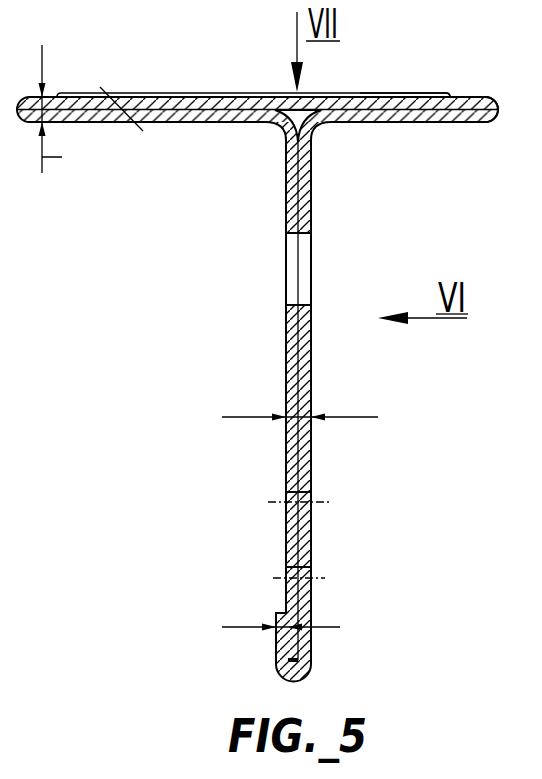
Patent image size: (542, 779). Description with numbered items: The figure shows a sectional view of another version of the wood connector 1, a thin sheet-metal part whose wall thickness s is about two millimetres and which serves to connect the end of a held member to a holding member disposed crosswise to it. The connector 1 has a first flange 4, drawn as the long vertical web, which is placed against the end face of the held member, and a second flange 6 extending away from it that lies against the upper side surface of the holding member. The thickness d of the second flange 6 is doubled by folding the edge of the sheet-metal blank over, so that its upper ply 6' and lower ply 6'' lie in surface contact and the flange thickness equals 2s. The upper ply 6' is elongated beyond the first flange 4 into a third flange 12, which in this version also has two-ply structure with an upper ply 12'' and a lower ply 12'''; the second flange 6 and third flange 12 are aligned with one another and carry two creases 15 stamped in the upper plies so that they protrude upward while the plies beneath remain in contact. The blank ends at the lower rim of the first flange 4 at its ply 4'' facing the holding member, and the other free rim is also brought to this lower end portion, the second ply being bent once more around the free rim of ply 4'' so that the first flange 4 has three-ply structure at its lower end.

The connector 1 is at (242, 88).
The first flange 4 is at (274, 396).
The ply of first flange 4'' is at (274, 568).
The second flange 6 is at (257, 150).
The upper ply of second flange 6' is at (257, 60).
The lower ply of second flange 6'' is at (257, 157).
The third flange 12 is at (405, 54).
The upper ply of third flange 12'' is at (474, 60).
The lower ply of third flange 12''' is at (459, 158).
The creases 15 is at (151, 92).
The thickness of second flange d is at (59, 110).
The doubled wall thickness 2s is at (237, 417).
The wall thickness s is at (232, 627).